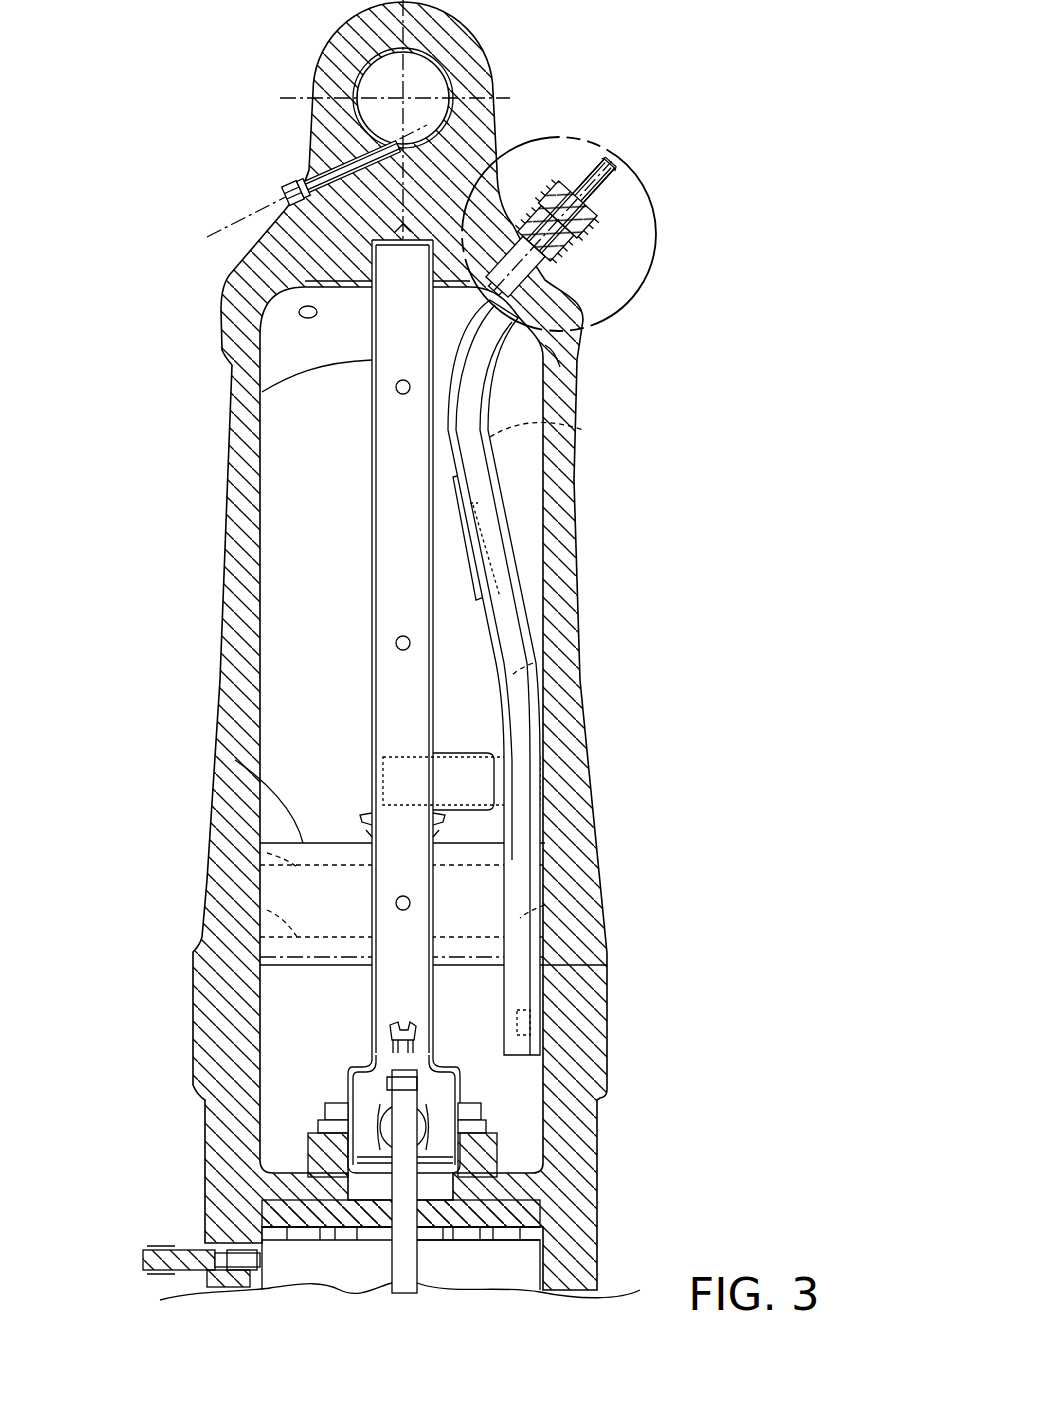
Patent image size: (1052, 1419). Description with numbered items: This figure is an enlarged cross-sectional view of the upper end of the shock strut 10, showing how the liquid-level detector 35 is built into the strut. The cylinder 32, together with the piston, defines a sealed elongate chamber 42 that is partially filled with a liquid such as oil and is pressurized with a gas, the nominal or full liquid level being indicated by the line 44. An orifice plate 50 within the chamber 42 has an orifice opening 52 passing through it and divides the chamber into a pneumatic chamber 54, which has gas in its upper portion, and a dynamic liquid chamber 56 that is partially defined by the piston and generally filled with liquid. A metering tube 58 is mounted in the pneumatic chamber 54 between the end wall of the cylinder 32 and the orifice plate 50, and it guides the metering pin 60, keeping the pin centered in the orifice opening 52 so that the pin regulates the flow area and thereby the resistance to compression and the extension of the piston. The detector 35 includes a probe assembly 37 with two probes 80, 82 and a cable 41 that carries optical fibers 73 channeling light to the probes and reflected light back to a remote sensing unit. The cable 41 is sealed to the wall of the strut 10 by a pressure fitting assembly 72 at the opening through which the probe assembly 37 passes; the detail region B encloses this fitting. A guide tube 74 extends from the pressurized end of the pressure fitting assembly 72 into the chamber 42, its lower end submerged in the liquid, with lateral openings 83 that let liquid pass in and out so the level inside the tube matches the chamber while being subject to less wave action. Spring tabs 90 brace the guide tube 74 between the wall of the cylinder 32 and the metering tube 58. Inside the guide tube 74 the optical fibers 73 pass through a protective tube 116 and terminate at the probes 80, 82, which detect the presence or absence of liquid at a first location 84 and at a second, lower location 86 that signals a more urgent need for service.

The shock strut 10 is at (416, 660).
The cylinder 32 is at (212, 978).
The detector 35 is at (502, 462).
The probe assembly 37 is at (540, 985).
The cable 41 is at (590, 178).
The sealed elongate chamber 42 is at (297, 452).
The nominal liquid level line 44 is at (235, 760).
The orifice plate 50 is at (533, 1230).
The orifice opening 52 is at (533, 1207).
The pneumatic chamber 54 is at (318, 615).
The dynamic liquid chamber 56 is at (523, 1263).
The metering tube 58 is at (262, 392).
The metering pin 60 is at (400, 1263).
The pressure fitting assembly 72 is at (594, 259).
The optical fibers 73 is at (562, 368).
The guide tube 74 is at (503, 517).
The probe 80 is at (545, 843).
The second probe 82 is at (537, 927).
The lateral openings 83 is at (540, 912).
The first liquid level location 84 is at (250, 852).
The second liquid level location 86 is at (230, 912).
The spring tabs 90 is at (460, 477).
The protective tube 116 is at (497, 607).
The detail region B is at (655, 200).